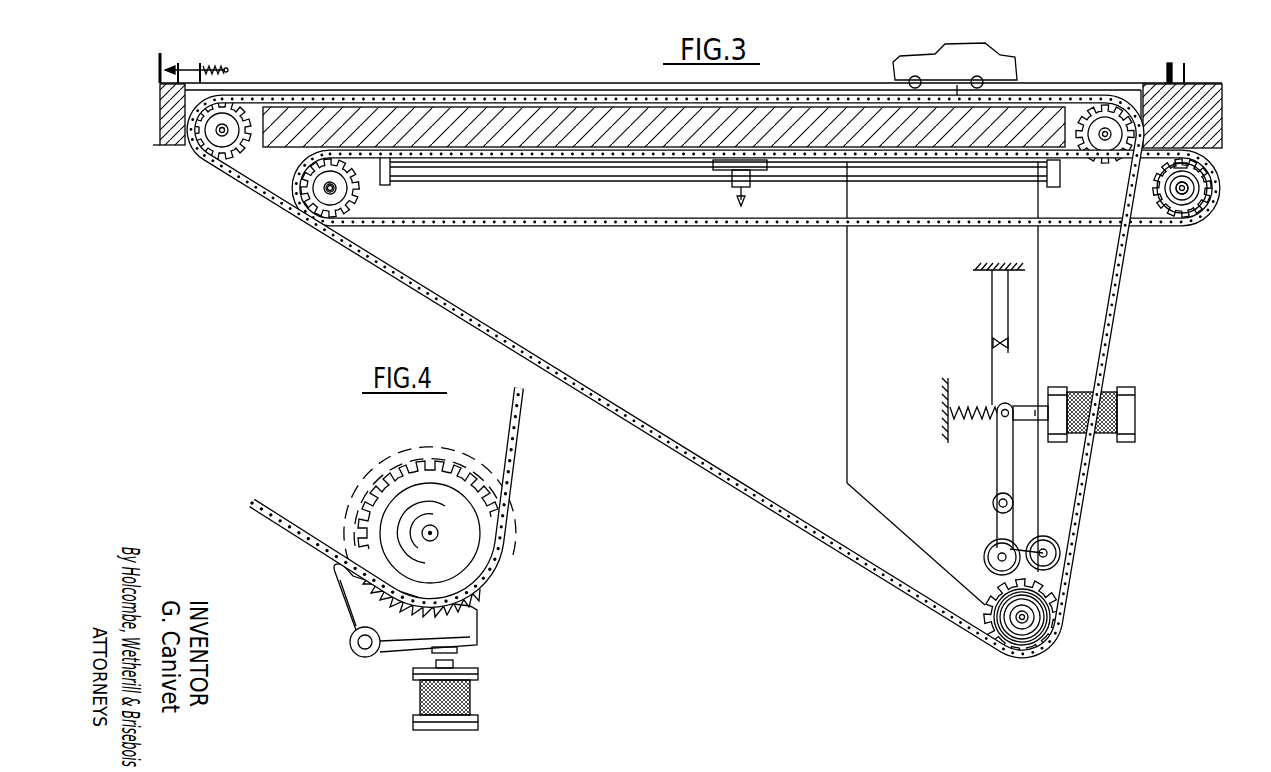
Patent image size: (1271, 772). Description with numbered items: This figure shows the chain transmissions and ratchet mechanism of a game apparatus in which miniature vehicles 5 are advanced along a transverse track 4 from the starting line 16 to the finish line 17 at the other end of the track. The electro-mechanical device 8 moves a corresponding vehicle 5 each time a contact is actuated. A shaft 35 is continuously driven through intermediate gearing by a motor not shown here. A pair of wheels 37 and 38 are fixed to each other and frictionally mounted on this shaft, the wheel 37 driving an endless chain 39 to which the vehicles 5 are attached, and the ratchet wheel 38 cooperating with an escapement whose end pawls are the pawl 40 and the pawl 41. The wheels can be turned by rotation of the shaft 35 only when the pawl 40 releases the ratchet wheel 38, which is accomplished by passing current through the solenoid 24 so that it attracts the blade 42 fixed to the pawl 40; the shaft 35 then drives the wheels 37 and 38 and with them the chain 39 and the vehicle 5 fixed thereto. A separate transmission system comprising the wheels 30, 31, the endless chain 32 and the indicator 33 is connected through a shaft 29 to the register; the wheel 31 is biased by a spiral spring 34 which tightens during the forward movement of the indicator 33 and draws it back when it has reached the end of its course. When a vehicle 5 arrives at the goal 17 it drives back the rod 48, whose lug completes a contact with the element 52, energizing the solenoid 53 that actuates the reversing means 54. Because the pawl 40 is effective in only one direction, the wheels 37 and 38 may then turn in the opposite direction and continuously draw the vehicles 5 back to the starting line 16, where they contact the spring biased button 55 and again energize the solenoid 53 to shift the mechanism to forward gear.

In FIG. 3, the transverse track 4 is at (1127, 86).
In FIG. 3, the miniature vehicle 5 is at (953, 63).
In FIG. 3, the electro-mechanical device 8 is at (712, 481).
In FIG. 4, the electro-mechanical device 8 is at (510, 587).
In FIG. 3, the starting line 16 is at (1113, 88).
In FIG. 3, the finish line 17 is at (225, 92).
In FIG. 4, the solenoid 24 is at (473, 694).
In FIG. 3, the shaft 29 is at (327, 189).
In FIG. 3, the wheel 30 is at (332, 196).
In FIG. 3, the wheel 31 is at (1152, 208).
In FIG. 3, the endless chain 32 is at (593, 224).
In FIG. 3, the indicator 33 is at (740, 207).
In FIG. 3, the spiral spring 34 is at (1197, 200).
In FIG. 3, the shaft 35 is at (1028, 620).
In FIG. 4, the shaft 35 is at (438, 533).
In FIG. 3, the wheel 37 is at (1003, 632).
In FIG. 4, the wheel 37 is at (427, 467).
In FIG. 3, the ratchet wheel 38 is at (1063, 627).
In FIG. 4, the ratchet wheel 38 is at (481, 600).
In FIG. 3, the endless chain 39 is at (1084, 481).
In FIG. 4, the endless chain 39 is at (272, 507).
In FIG. 4, the pawl 40 is at (478, 620).
In FIG. 4, the pawl 41 is at (333, 574).
In FIG. 4, the blade 42 is at (436, 649).
In FIG. 3, the rod 48 is at (188, 63).
In FIG. 3, the contact element 52 is at (157, 63).
In FIG. 3, the solenoid 53 is at (1115, 387).
In FIG. 3, the reversing means 54 is at (1000, 556).
In FIG. 3, the spring biased button 55 is at (1173, 70).